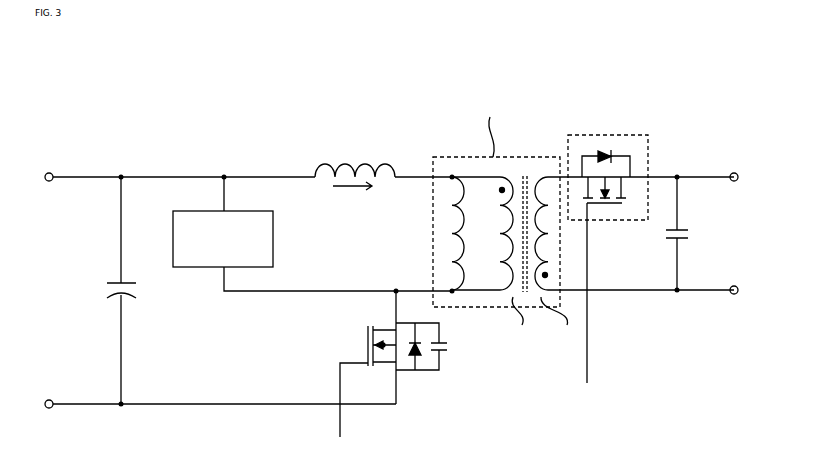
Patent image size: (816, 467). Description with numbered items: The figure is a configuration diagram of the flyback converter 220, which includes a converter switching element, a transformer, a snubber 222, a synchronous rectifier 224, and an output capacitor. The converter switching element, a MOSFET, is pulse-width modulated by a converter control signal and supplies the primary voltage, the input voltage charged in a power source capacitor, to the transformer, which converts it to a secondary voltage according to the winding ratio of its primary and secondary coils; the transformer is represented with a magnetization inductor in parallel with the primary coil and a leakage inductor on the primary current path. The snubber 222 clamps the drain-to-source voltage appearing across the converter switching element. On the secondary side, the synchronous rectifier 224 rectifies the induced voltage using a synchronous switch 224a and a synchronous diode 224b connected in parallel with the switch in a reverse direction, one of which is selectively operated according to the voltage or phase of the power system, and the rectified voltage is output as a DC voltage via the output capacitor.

The flyback converter 220 is at (58, 51).
The snubber 222 is at (273, 248).
The synchronous rectifier 224 is at (631, 232).
The synchronous switch 224a is at (613, 204).
The synchronous diode 224b is at (613, 151).